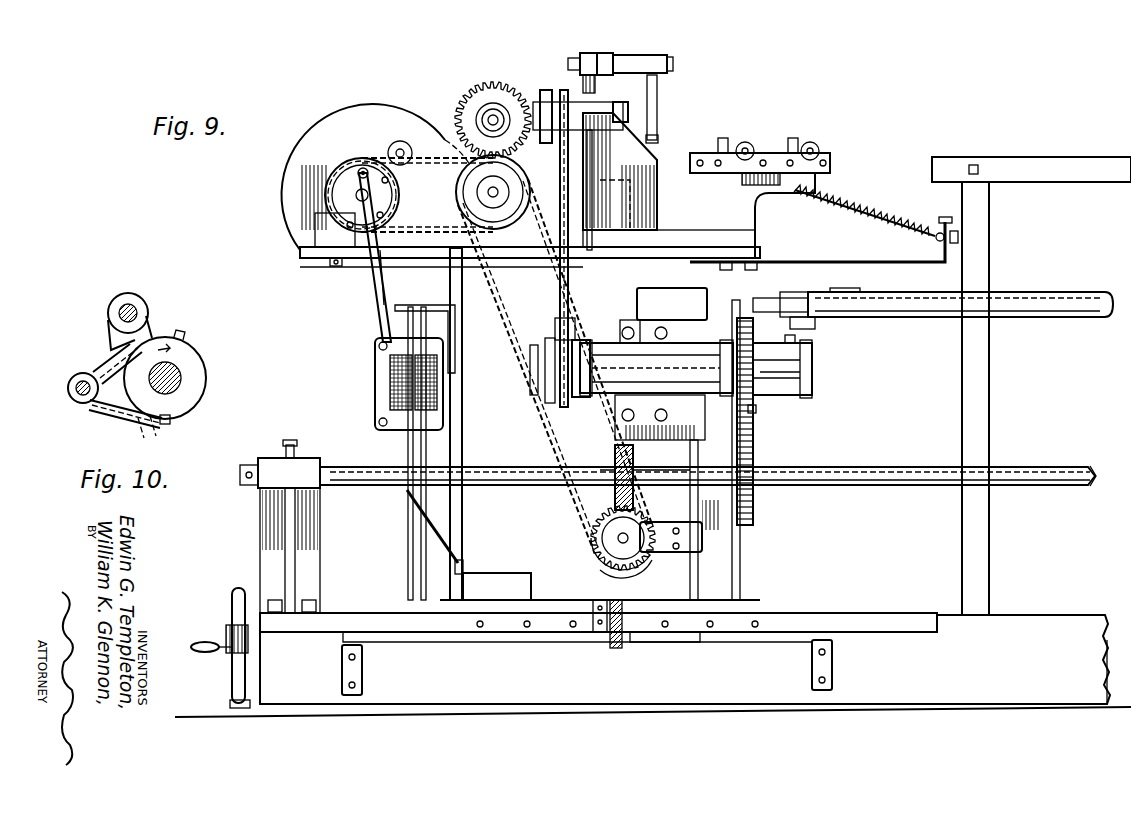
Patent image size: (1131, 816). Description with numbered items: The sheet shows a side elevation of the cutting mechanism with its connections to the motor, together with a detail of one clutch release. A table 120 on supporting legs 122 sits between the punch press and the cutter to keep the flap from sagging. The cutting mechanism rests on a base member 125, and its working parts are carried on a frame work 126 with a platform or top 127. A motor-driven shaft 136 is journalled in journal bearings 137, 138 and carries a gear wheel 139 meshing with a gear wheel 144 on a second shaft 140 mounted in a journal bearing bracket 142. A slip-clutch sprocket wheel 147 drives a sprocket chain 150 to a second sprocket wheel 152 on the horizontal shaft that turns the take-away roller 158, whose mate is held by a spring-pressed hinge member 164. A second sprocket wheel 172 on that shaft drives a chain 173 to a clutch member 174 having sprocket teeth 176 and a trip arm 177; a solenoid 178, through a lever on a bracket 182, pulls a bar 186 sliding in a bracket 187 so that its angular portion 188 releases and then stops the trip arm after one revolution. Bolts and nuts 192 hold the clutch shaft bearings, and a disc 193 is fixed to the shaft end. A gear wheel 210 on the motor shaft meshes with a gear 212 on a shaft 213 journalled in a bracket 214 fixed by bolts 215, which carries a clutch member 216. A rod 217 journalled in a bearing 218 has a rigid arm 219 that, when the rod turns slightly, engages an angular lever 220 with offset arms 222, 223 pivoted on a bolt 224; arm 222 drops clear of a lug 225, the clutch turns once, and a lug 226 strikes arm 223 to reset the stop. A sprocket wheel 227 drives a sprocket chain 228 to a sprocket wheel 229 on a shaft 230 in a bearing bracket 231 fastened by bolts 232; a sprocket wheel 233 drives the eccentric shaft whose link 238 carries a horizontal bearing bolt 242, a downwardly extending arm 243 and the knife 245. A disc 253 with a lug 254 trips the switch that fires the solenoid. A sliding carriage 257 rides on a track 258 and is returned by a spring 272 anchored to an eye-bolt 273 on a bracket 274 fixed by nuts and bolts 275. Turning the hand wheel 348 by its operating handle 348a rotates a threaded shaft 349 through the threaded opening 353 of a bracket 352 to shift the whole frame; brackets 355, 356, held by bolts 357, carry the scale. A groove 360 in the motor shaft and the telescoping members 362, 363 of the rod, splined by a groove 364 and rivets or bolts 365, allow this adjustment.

In FIG. 9, the table 120 is at (1050, 157).
In FIG. 9, the supporting legs 122 is at (990, 391).
In FIG. 9, the base member 125 is at (1052, 616).
In FIG. 9, the frame work 126 is at (462, 530).
In FIG. 9, the platform or top 127 is at (300, 252).
In FIG. 9, the shaft 136 is at (1040, 485).
In FIG. 9, the journal bearing 137 is at (645, 461).
In FIG. 9, the journal bearing 138 is at (258, 492).
In FIG. 9, the gear wheel 139 is at (614, 452).
In FIG. 9, the second shaft 140 is at (602, 539).
In FIG. 9, the journal bearing bracket 142 is at (703, 538).
In FIG. 9, the gear wheel 144 is at (598, 562).
In FIG. 9, the sprocket wheel 147 is at (624, 573).
In FIG. 9, the sprocket chain 150 is at (535, 392).
In FIG. 9, the second sprocket wheel 152 is at (490, 268).
In FIG. 9, the take-away roller 158 is at (475, 100).
In FIG. 9, the hinge member 164 is at (425, 128).
In FIG. 9, the second sprocket wheel 172 is at (457, 196).
In FIG. 9, the chain 173 is at (398, 141).
In FIG. 9, the clutch member 174 is at (330, 185).
In FIG. 9, the sprocket teeth 176 is at (327, 203).
In FIG. 9, the trip arm 177 is at (372, 270).
In FIG. 9, the solenoid 178 is at (375, 365).
In FIG. 9, the bracket 182 is at (428, 500).
In FIG. 9, the bar 186 is at (427, 418).
In FIG. 9, the bracket 187 is at (455, 340).
In FIG. 9, the angular portion 188 is at (378, 290).
In FIG. 9, the bolts and nuts 192 is at (330, 262).
In FIG. 9, the disc 193 is at (322, 152).
In FIG. 9, the gear wheel 210 is at (754, 510).
In FIG. 9, the gear 212 is at (755, 335).
In FIG. 9, the shaft 213 is at (812, 373).
In FIG. 10, the shaft 213 is at (172, 374).
In FIG. 9, the bracket 214 is at (656, 368).
In FIG. 9, the bolts 215 is at (624, 328).
In FIG. 9, the clutch member 216 is at (785, 396).
In FIG. 10, the clutch member 216 is at (207, 380).
In FIG. 9, the rod 217 is at (922, 317).
In FIG. 10, the rod 217 is at (134, 311).
In FIG. 9, the bearing 218 is at (660, 292).
In FIG. 10, the rigid arm 219 is at (108, 330).
In FIG. 10, the angular lever 220 is at (100, 412).
In FIG. 10, the offset arm 222 is at (146, 432).
In FIG. 10, the offset arm 223 is at (98, 365).
In FIG. 10, the bolt 224 is at (68, 389).
In FIG. 9, the lug 225 is at (758, 412).
In FIG. 10, the lug 225 is at (172, 420).
In FIG. 9, the lug 226 is at (795, 339).
In FIG. 10, the lug 226 is at (179, 332).
In FIG. 9, the sprocket wheel 227 is at (580, 400).
In FIG. 9, the sprocket chain 228 is at (560, 318).
In FIG. 9, the sprocket wheel 229 is at (563, 90).
In FIG. 9, the shaft 230 is at (630, 112).
In FIG. 9, the bearing bracket 231 is at (610, 142).
In FIG. 9, the bolts 232 is at (655, 215).
In FIG. 9, the sprocket wheel 233 is at (545, 88).
In FIG. 9, the link 238 is at (605, 52).
In FIG. 9, the horizontal bearing bolt 242 is at (673, 62).
In FIG. 9, the downwardly extending arm 243 is at (658, 88).
In FIG. 9, the knife 245 is at (585, 52).
In FIG. 9, the disc 253 is at (530, 360).
In FIG. 9, the lug 254 is at (549, 338).
In FIG. 9, the sliding carriage 257 is at (818, 148).
In FIG. 9, the track 258 is at (757, 232).
In FIG. 9, the spring 272 is at (862, 210).
In FIG. 9, the eye-bolt 273 is at (940, 232).
In FIG. 9, the bracket 274 is at (820, 262).
In FIG. 9, the nuts and bolts 275 is at (745, 270).
In FIG. 9, the hand wheel 348 is at (238, 588).
In FIG. 9, the operating handle 348a is at (205, 652).
In FIG. 9, the threaded shaft 349 is at (540, 633).
In FIG. 9, the bracket 352 is at (612, 652).
In FIG. 9, the threaded opening 353 is at (655, 645).
In FIG. 9, the bracket 355 is at (342, 672).
In FIG. 9, the bracket 356 is at (812, 663).
In FIG. 9, the bolts 357 is at (356, 659).
In FIG. 9, the groove 360 is at (1095, 467).
In FIG. 9, the telescoping member 362 is at (812, 322).
In FIG. 10, the telescoping member 362 is at (130, 300).
In FIG. 9, the telescoping member 363 is at (1040, 292).
In FIG. 9, the groove 364 is at (812, 294).
In FIG. 9, the rivets or bolts 365 is at (870, 292).